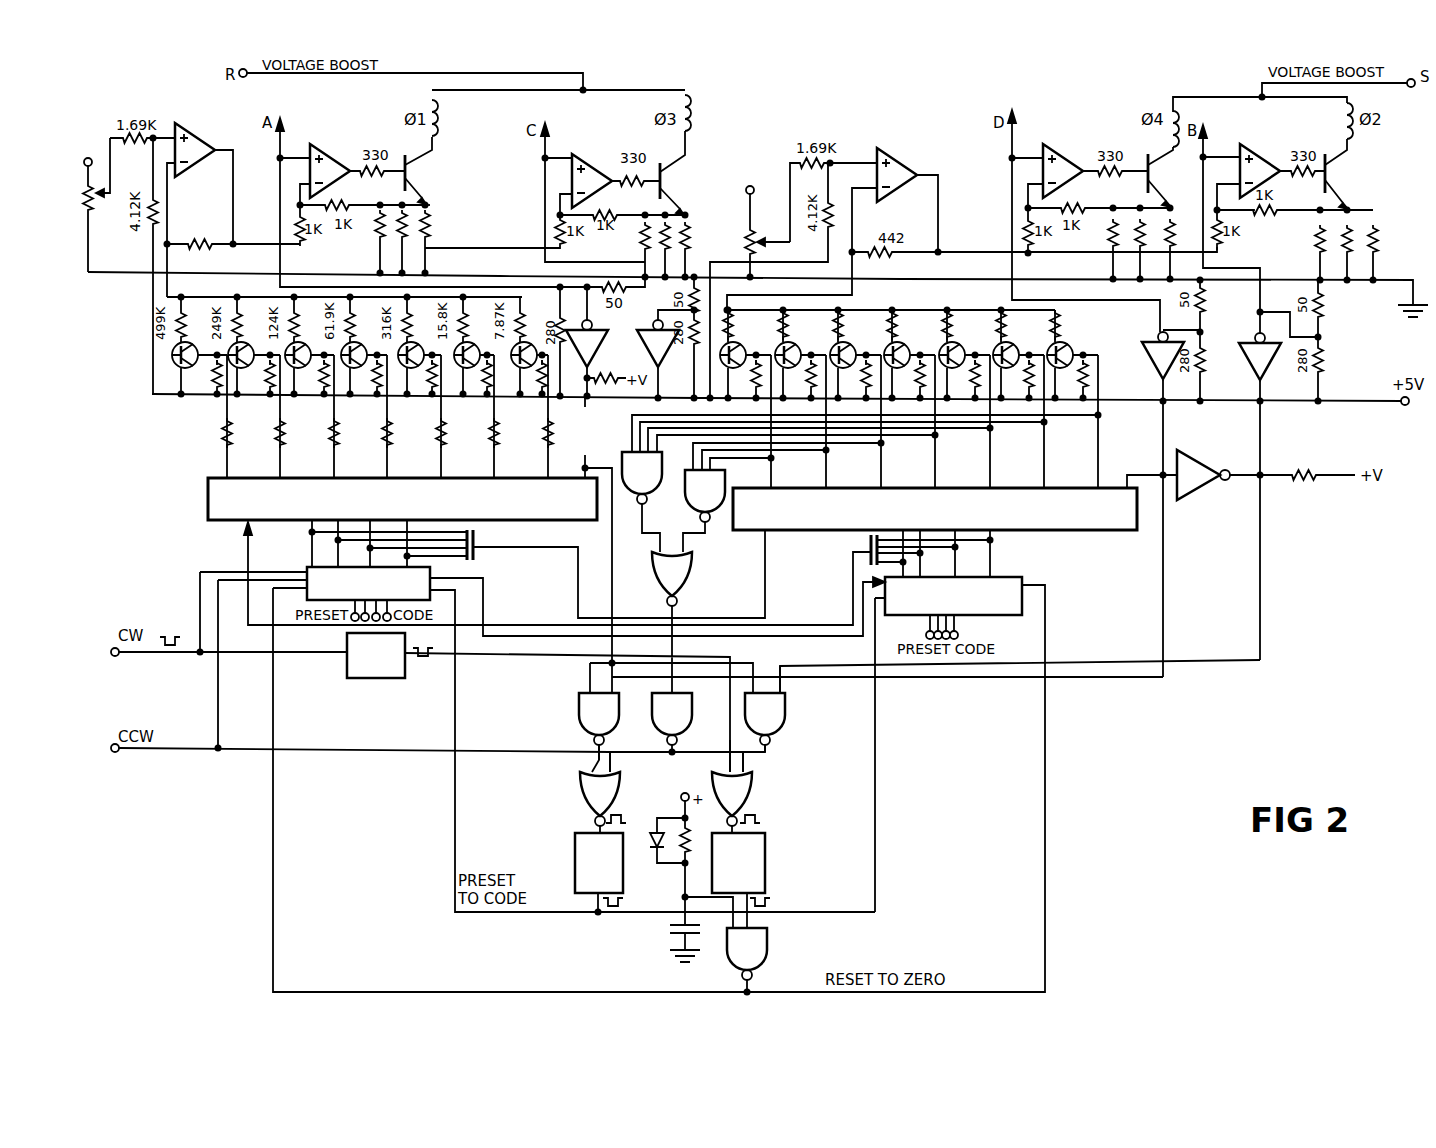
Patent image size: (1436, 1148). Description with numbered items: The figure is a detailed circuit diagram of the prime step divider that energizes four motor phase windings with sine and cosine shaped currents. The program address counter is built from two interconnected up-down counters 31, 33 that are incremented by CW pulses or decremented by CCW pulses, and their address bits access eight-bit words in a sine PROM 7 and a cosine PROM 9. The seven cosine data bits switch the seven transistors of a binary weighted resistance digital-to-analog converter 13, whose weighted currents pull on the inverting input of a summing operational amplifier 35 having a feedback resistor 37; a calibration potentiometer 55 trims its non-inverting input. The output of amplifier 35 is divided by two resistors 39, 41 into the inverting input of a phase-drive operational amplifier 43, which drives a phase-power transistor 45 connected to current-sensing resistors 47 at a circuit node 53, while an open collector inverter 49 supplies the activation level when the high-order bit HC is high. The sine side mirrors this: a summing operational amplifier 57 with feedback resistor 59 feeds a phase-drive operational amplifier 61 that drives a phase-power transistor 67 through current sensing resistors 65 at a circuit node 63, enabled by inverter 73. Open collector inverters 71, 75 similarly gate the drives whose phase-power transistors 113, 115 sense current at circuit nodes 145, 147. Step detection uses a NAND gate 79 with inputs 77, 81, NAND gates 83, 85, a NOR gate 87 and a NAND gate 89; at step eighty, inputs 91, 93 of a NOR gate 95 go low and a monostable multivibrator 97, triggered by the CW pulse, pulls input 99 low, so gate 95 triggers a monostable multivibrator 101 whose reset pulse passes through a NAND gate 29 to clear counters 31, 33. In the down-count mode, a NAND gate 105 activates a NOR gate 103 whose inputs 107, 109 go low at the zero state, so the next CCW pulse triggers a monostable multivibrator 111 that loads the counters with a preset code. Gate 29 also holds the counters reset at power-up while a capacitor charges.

The sine PROM 7 is at (208, 493).
The cosine PROM 9 is at (1108, 532).
The cosine digital-to-analog converter 13 is at (1105, 333).
The NAND gate 29 is at (773, 948).
The up-down counter 31 is at (307, 568).
The up-down counter 33 is at (1022, 580).
The summing operational amplifier 35 is at (893, 150).
The feedback resistor 37 is at (901, 256).
The resistor 39 is at (1282, 208).
The resistor 41 is at (1229, 244).
The phase-drive operational amplifier 43 is at (1250, 149).
The phase-power transistor 45 is at (1335, 173).
The current-sensing resistors 47 is at (1311, 226).
The open collector inverter 49 is at (1248, 354).
The circuit node 53 is at (1350, 207).
The calibration potentiometer 55 is at (747, 243).
The summing operational amplifier 57 is at (206, 139).
The feedback resistor 59 is at (206, 250).
The phase-drive operational amplifier 61 is at (315, 148).
The circuit node 63 is at (430, 209).
The current sensing resistors 65 is at (436, 212).
The phase-power transistor 67 is at (415, 180).
The open collector inverter 71 is at (653, 340).
The open collector inverter 73 is at (594, 342).
The open collector inverter 75 is at (1156, 336).
The input 77 is at (745, 694).
The NAND gate 79 is at (784, 736).
The input 81 is at (786, 692).
The NAND gate 83 is at (709, 526).
The NAND gate 85 is at (645, 504).
The NOR gate 87 is at (690, 588).
The NAND gate 89 is at (652, 706).
The input 91 is at (750, 781).
The input 93 is at (720, 780).
The NOR gate 95 is at (753, 795).
The monostable multivibrator 97 is at (378, 678).
The input 99 is at (728, 750).
The monostable multivibrator 101 is at (767, 860).
The NOR gate 103 is at (581, 794).
The NAND gate 105 is at (579, 700).
The input 107 is at (620, 783).
The input 109 is at (590, 752).
The monostable multivibrator 111 is at (575, 852).
The phase-power transistor 113 is at (668, 180).
The phase-power transistor 115 is at (1150, 183).
The circuit node 145 is at (686, 210).
The circuit node 147 is at (1171, 212).